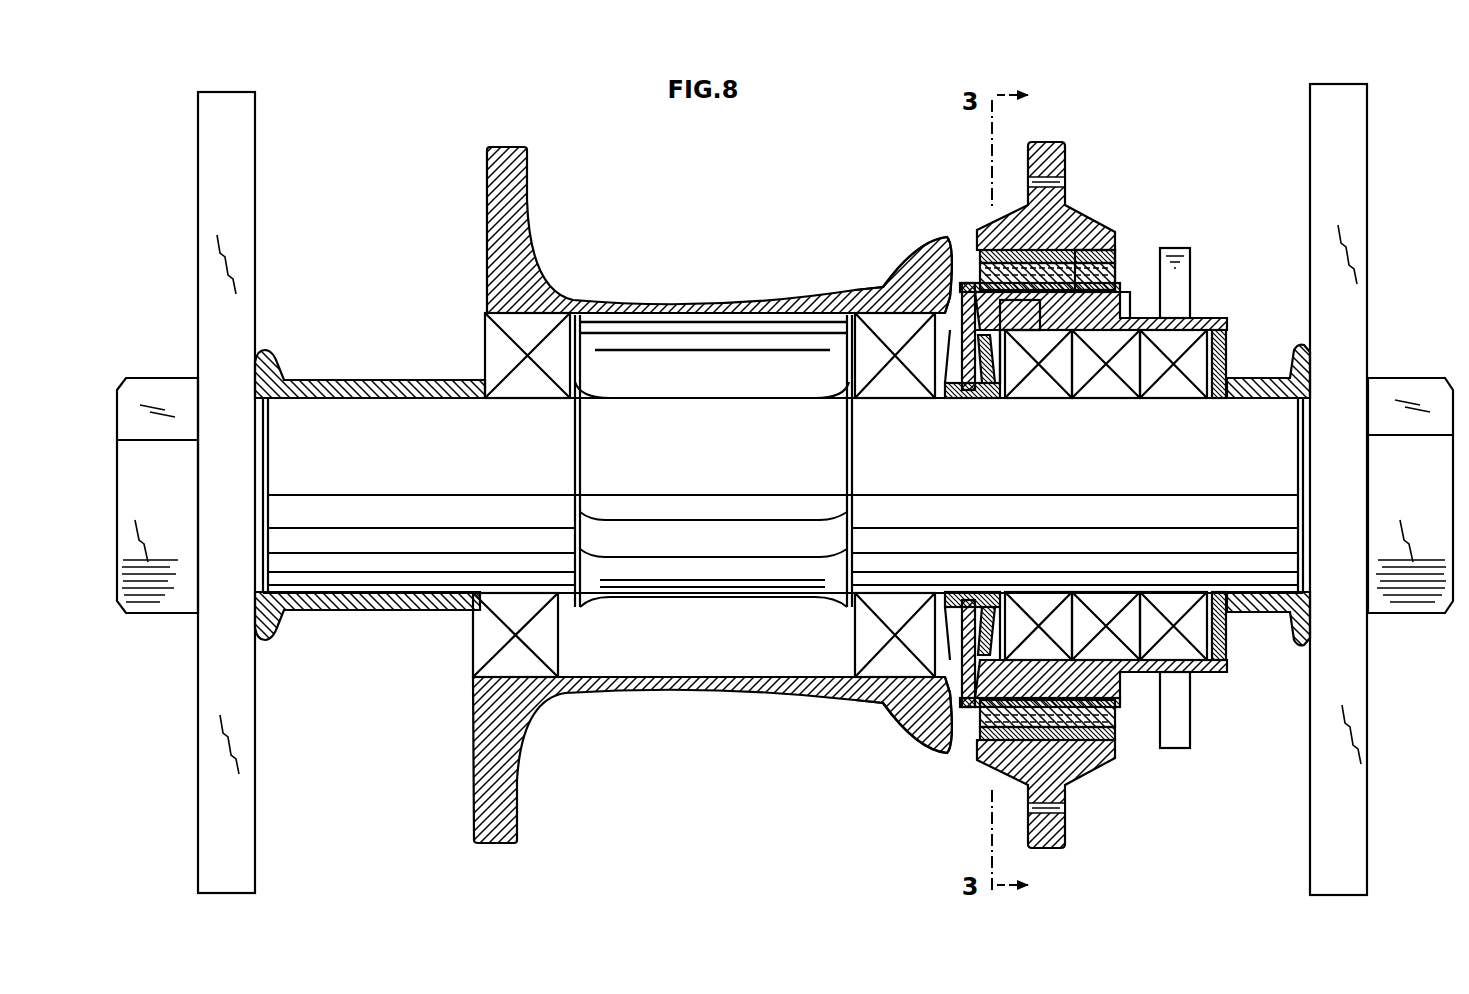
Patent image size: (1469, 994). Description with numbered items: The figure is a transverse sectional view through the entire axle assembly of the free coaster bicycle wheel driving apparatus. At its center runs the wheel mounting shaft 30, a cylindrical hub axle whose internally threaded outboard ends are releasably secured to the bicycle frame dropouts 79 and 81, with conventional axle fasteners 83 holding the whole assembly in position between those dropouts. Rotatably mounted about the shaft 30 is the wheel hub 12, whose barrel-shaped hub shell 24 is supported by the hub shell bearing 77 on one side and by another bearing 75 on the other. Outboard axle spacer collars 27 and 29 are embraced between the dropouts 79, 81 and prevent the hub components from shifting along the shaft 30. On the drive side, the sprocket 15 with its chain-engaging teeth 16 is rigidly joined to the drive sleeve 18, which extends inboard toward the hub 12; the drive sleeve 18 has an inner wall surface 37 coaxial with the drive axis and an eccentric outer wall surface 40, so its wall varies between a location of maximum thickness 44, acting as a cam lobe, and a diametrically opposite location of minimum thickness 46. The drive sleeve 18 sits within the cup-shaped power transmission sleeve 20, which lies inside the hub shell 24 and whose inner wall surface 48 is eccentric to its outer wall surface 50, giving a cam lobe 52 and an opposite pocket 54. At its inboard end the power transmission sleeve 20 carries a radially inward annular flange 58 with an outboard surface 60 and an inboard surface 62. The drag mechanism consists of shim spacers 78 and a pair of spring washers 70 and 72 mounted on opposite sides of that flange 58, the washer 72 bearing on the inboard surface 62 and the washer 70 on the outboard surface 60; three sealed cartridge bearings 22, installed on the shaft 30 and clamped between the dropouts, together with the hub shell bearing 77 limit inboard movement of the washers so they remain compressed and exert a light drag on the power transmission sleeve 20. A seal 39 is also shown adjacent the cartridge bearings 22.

The wheel hub 12 is at (703, 300).
The sprocket 15 is at (1205, 318).
The teeth 16 is at (1192, 266).
The drive sleeve 18 is at (1133, 672).
The power transmission sleeve 20 is at (1005, 768).
The sealed cartridge bearings 22 is at (1165, 398).
The hub shell 24 is at (937, 233).
The axle spacer collar 27 is at (1250, 378).
The axle spacer collar 29 is at (433, 380).
The wheel mounting shaft 30 is at (375, 432).
The cylindrical inner wall surface 37 is at (930, 741).
The seal 39 is at (1080, 262).
The cylindrical outer wall drive sleeve surface 40 is at (962, 755).
The location of maximum wall thickness 44 is at (963, 237).
The location of minimum wall thickness 46 is at (1085, 752).
The cylindrical inner wall surface 48 is at (1128, 300).
The cylindrical outer wall surface 50 is at (1010, 250).
The location of maximum wall thickness 52 is at (985, 752).
The location of minimum wall thickness 54 is at (1050, 248).
The annular flange 58 is at (960, 286).
The outboard annular surface 60 is at (1015, 330).
The inboard annular surface 62 is at (960, 300).
The spring washer 70 is at (990, 335).
The spring washer 72 is at (960, 350).
The bearing 75 is at (485, 638).
The hub shell bearing 77 is at (865, 632).
The shim spacers 78 is at (990, 400).
The bicycle frame dropout 79 is at (232, 813).
The bicycle frame dropout 81 is at (1310, 845).
The axle fasteners 83 is at (160, 598).